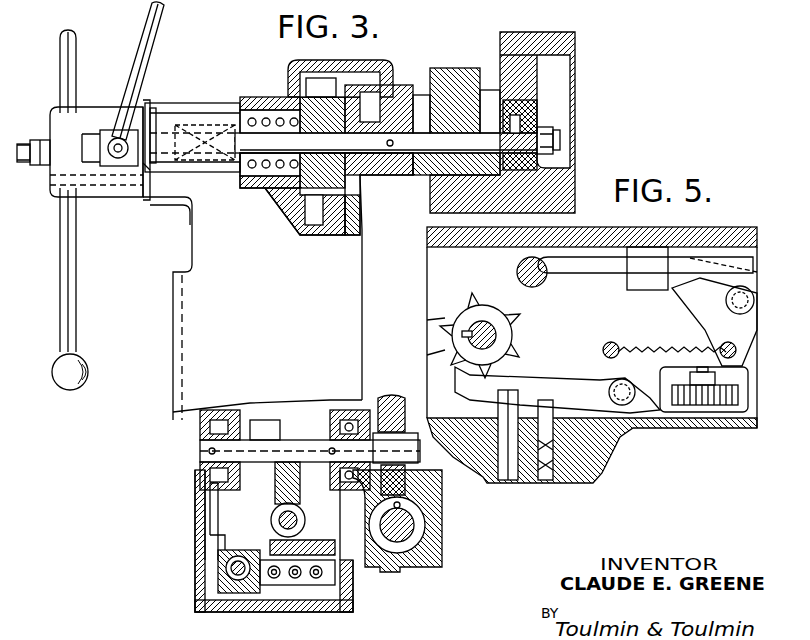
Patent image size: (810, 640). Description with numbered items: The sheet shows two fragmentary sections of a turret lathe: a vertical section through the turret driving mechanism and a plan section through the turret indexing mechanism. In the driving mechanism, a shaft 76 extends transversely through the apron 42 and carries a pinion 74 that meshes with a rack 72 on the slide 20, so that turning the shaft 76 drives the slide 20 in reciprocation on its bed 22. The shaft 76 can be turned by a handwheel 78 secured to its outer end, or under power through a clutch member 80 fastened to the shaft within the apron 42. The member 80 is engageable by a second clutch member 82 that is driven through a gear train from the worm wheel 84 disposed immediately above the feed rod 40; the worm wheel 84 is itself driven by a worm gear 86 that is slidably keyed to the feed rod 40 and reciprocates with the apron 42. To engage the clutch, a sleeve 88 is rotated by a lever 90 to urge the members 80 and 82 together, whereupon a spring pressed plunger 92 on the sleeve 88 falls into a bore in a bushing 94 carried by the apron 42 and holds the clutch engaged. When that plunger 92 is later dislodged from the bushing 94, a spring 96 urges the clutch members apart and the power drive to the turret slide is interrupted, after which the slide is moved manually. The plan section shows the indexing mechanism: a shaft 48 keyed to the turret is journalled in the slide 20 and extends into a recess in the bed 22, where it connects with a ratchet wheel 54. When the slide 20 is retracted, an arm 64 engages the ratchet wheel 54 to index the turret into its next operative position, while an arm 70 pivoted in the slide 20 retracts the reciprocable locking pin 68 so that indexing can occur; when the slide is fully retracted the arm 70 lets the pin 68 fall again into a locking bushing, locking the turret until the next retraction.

In FIG. 3, the slide 20 is at (548, 42).
In FIG. 5, the slide 20 is at (688, 426).
In FIG. 3, the bed 22 is at (448, 90).
In FIG. 3, the feed rod 40 is at (400, 533).
In FIG. 3, the apron 42 is at (205, 308).
In FIG. 5, the shaft 48 is at (492, 342).
In FIG. 5, the ratchet wheel 54 is at (500, 342).
In FIG. 5, the arm 64 is at (568, 388).
In FIG. 5, the locking pin 68 is at (517, 272).
In FIG. 5, the arm 70 is at (594, 270).
In FIG. 3, the rack 72 is at (537, 107).
In FIG. 3, the pinion 74 is at (548, 152).
In FIG. 5, the pinion 74 is at (733, 402).
In FIG. 3, the shaft 76 is at (478, 143).
In FIG. 3, the handwheel 78 is at (63, 240).
In FIG. 3, the clutch member 80 is at (358, 97).
In FIG. 3, the second clutch member 82 is at (352, 200).
In FIG. 3, the worm wheel 84 is at (393, 405).
In FIG. 3, the worm gear 86 is at (420, 528).
In FIG. 3, the sleeve 88 is at (112, 115).
In FIG. 3, the lever 90 is at (143, 73).
In FIG. 3, the spring pressed plunger 92 is at (143, 163).
In FIG. 3, the bushing 94 is at (152, 140).
In FIG. 3, the spring 96 is at (318, 98).